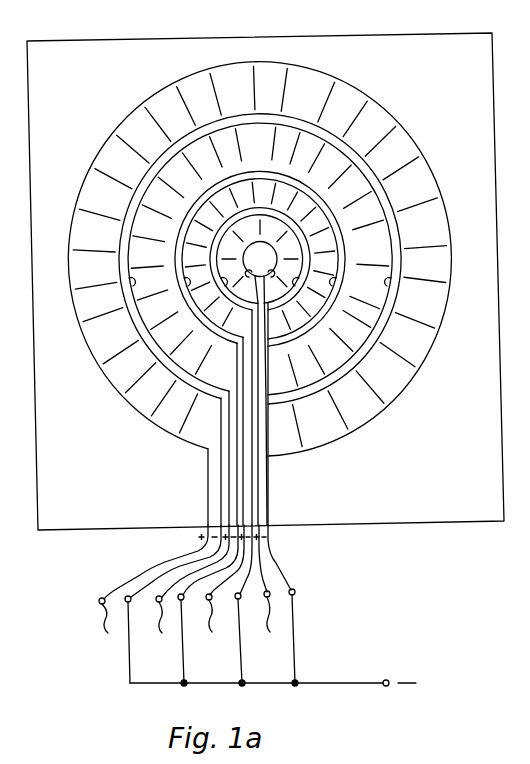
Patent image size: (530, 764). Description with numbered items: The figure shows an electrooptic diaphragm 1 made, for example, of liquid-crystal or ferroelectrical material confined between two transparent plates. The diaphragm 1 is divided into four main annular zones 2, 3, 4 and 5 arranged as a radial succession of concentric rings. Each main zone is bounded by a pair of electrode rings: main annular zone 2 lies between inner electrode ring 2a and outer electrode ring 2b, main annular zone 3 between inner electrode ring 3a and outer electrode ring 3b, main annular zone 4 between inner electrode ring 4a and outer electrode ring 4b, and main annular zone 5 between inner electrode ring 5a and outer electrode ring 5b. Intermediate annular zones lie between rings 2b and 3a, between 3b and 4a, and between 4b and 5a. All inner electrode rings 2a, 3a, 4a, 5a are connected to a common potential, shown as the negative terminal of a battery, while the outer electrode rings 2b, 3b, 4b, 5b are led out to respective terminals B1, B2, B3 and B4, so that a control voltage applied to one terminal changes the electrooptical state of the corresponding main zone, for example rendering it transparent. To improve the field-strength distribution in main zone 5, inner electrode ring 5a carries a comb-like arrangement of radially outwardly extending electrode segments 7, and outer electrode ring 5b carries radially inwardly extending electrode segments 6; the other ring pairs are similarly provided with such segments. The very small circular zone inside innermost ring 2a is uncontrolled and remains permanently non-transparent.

The electrooptic diaphragm 1 is at (427, 510).
The main annular zone 2 is at (180, 142).
The main annular zone 3 is at (230, 174).
The main annular zone 4 is at (261, 140).
The main annular zone 5 is at (278, 95).
The electrode segments 6 is at (360, 127).
The electrode segments 7 is at (380, 150).
The inner electrode ring 2a is at (188, 353).
The outer electrode ring 2b is at (347, 347).
The inner electrode ring 3a is at (170, 333).
The outer electrode ring 3b is at (380, 343).
The inner electrode ring 4a is at (188, 311).
The outer electrode ring 4b is at (385, 311).
The inner electrode ring 5a is at (188, 288).
The outer electrode ring 5b is at (440, 296).
The terminal B1 is at (104, 635).
The terminal B2 is at (161, 634).
The terminal B3 is at (211, 633).
The terminal B4 is at (269, 631).